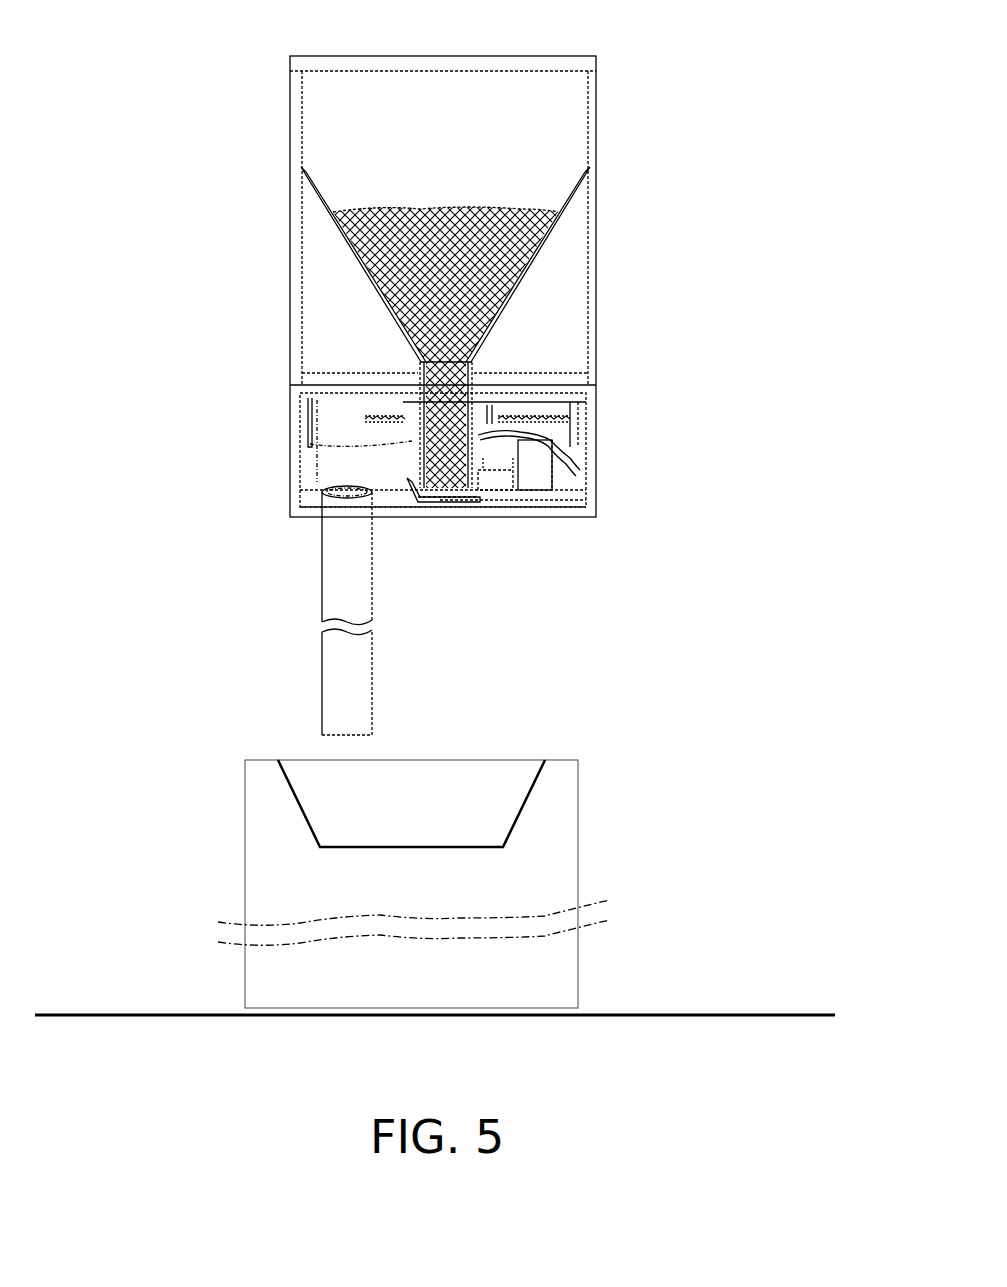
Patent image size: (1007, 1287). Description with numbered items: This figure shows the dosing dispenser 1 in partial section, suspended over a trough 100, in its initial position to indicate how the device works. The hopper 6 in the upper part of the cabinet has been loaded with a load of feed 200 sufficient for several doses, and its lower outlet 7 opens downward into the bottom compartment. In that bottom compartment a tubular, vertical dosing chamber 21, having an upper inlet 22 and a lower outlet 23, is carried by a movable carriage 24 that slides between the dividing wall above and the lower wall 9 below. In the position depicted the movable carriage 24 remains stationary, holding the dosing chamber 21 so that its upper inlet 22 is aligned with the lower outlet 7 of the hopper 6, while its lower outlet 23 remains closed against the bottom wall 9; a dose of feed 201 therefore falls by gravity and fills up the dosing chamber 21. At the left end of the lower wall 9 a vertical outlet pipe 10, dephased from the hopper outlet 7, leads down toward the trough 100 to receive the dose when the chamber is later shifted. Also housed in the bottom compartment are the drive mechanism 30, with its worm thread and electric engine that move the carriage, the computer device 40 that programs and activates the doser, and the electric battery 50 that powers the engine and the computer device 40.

The dosing dispenser 1 is at (722, 86).
The hopper 6 is at (343, 303).
The lower outlet 7 is at (418, 371).
The lower wall 9 is at (304, 506).
The vertical outlet pipe 10 is at (342, 597).
The dosing chamber 21 is at (421, 458).
The upper inlet 22 is at (415, 398).
The lower outlet 23 is at (440, 501).
The movable carriage 24 is at (474, 503).
The drive mechanism 30 is at (584, 431).
The computer device 40 is at (499, 474).
The electric battery 50 is at (541, 472).
The trough 100 is at (262, 818).
The feed 200 is at (345, 263).
The dose of feed 201 is at (418, 441).